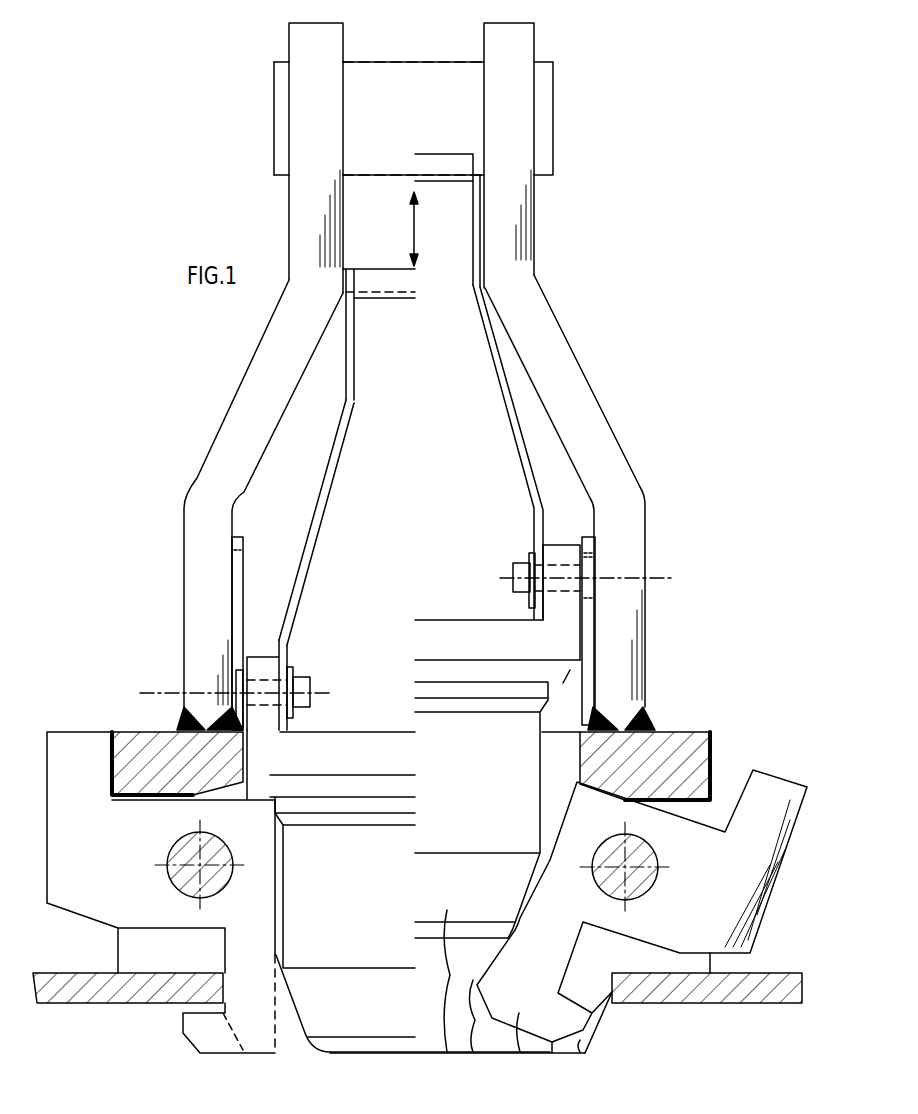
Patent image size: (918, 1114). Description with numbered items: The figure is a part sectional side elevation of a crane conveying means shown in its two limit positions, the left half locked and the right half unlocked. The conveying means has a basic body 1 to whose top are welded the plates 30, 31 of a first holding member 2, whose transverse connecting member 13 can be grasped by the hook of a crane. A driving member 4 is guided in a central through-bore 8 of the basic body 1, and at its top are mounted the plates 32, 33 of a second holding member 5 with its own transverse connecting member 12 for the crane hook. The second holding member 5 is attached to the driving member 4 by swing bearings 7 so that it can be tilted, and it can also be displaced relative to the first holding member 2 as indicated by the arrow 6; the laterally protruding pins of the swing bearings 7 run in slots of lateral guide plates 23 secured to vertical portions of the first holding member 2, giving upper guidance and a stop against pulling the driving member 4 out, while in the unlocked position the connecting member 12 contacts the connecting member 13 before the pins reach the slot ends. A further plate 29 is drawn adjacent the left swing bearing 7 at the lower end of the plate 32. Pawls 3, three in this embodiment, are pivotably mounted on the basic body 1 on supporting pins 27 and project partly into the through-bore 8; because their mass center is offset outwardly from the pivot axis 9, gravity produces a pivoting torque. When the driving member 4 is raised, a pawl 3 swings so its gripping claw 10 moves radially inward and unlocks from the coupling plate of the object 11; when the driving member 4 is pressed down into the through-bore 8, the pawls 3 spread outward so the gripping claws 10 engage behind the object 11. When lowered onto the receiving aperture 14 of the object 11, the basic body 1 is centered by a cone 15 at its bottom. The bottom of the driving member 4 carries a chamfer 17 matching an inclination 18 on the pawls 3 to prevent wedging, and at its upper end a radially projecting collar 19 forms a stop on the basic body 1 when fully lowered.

The basic body 1 is at (698, 764).
The first holding member 2 is at (612, 400).
The pawls 3 is at (383, 1047).
The driving member 4 is at (425, 871).
The second holding member 5 is at (551, 497).
The arrow 6 is at (420, 228).
The swing bearings 7 is at (305, 687).
The central through-bore 8 is at (580, 750).
The pivot axis 9 is at (660, 853).
The gripping claw 10 is at (195, 1028).
The object 11 is at (730, 1000).
The connecting member 12 is at (450, 165).
The connecting member 13 is at (467, 72).
The receiving aperture 14 is at (608, 997).
The cone 15 is at (459, 1061).
The chamfer 17 is at (292, 1012).
The inclination 18 is at (472, 1031).
The collar 19 is at (278, 768).
The guide plates 23 is at (243, 578).
The supporting pin 27 is at (640, 882).
The clamping plate 29 is at (271, 672).
The plate 30 is at (205, 477).
The plate 31 is at (580, 385).
The plate 32 is at (328, 497).
The plate 33 is at (519, 447).